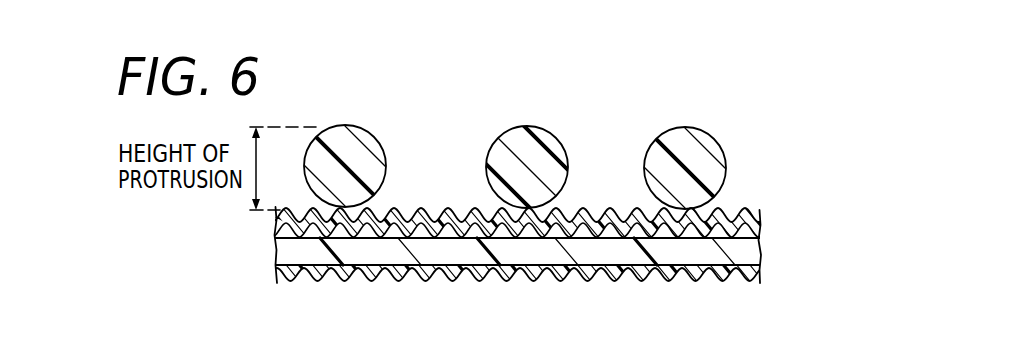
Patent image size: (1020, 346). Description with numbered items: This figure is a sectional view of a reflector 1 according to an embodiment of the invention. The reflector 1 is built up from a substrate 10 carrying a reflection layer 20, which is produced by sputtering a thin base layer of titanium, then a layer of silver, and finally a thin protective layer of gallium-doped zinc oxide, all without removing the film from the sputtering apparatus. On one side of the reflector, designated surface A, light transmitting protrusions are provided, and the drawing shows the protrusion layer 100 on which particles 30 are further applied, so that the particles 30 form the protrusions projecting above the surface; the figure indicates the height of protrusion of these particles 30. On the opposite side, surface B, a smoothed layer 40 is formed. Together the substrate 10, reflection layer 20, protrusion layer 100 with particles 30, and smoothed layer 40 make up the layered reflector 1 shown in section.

The reflector 1 is at (588, 138).
The substrate 10 is at (750, 253).
The reflection layer 20 is at (748, 213).
The particles 30 is at (708, 150).
The smoothed layer 40 is at (725, 277).
The protrusion layer 100 is at (753, 228).